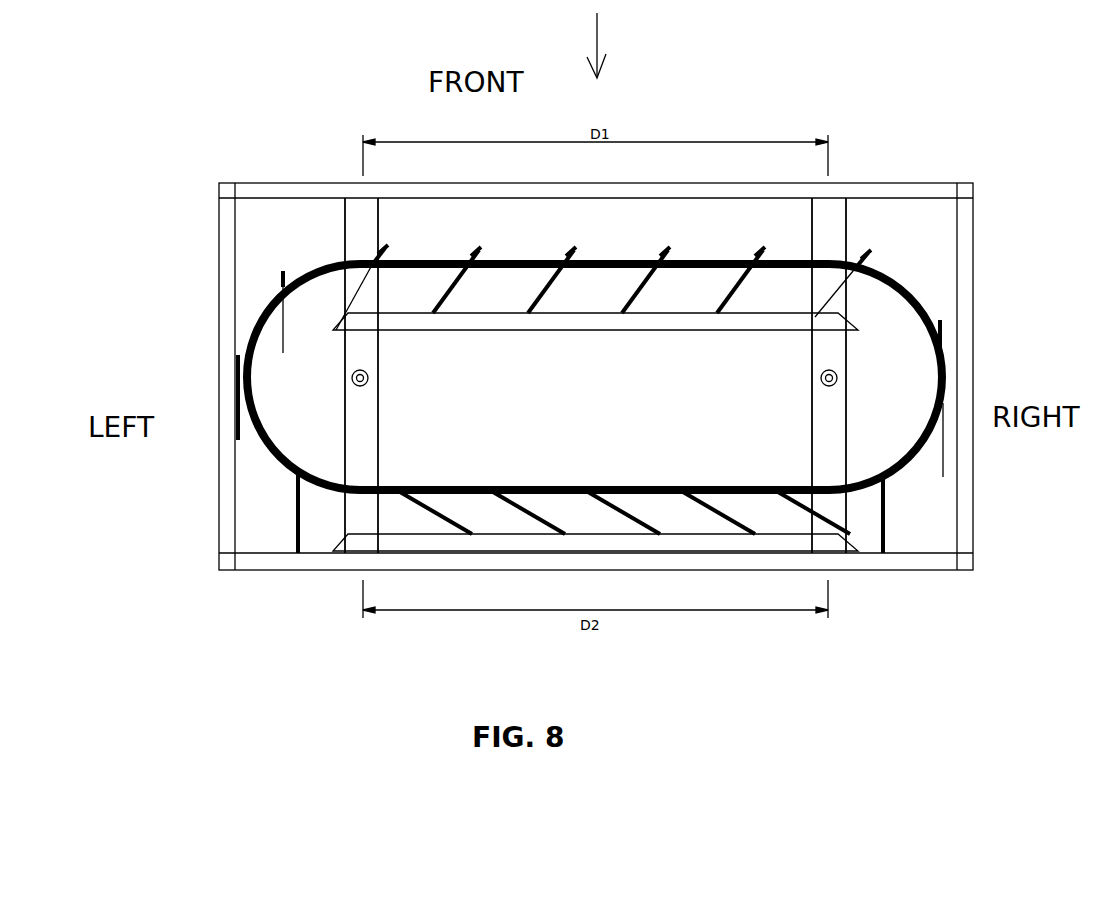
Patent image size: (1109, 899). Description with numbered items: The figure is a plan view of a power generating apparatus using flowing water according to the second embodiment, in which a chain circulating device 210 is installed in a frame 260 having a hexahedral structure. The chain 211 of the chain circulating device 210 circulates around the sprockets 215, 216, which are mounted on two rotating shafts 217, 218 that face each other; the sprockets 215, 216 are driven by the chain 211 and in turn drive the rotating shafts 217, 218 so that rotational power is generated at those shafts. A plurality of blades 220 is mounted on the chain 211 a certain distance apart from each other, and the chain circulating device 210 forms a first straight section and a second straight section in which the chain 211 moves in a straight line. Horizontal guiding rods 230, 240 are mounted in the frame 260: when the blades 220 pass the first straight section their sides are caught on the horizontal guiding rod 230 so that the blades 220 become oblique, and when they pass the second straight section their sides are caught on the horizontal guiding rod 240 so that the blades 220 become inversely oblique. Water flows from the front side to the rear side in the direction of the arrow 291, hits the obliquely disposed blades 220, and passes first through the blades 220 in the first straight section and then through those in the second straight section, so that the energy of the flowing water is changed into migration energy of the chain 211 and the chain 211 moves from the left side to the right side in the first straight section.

The chain circulating device 210 is at (313, 248).
The chain 211 is at (505, 258).
The sprocket 215 is at (883, 318).
The sprocket 216 is at (277, 370).
The rotating shaft 217 is at (840, 380).
The rotating shaft 218 is at (352, 385).
The blade 220 is at (555, 293).
The horizontal guiding rod 230 is at (645, 322).
The horizontal guiding rod 240 is at (583, 540).
The frame 260 is at (967, 218).
The arrow 291 is at (597, 33).